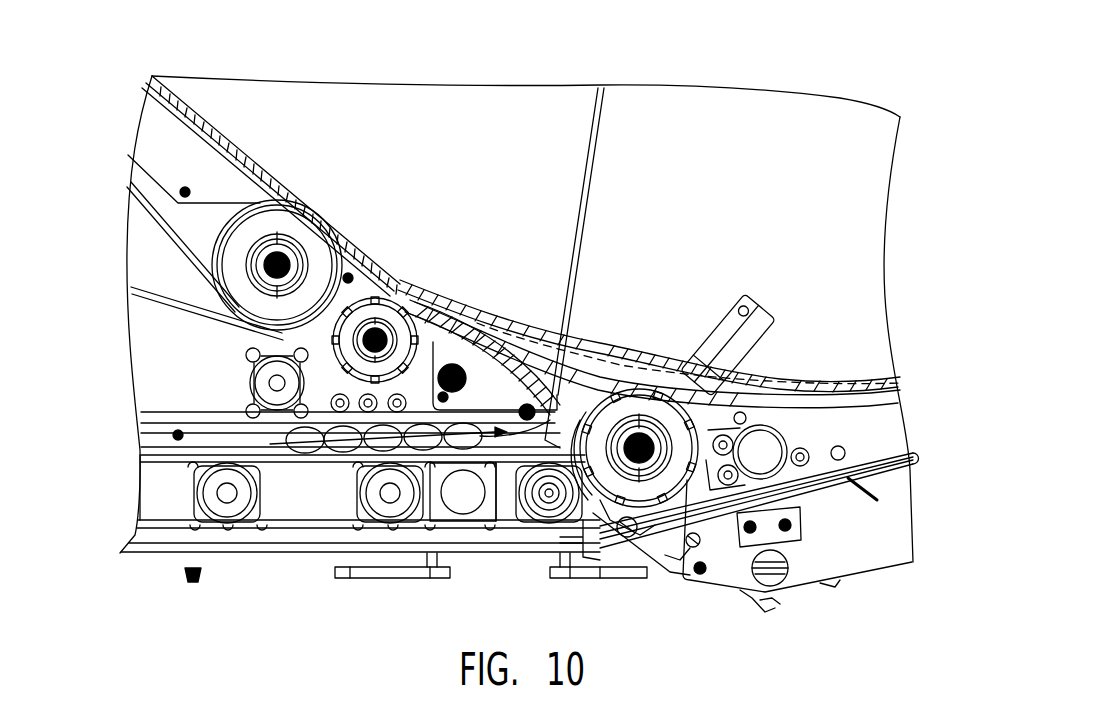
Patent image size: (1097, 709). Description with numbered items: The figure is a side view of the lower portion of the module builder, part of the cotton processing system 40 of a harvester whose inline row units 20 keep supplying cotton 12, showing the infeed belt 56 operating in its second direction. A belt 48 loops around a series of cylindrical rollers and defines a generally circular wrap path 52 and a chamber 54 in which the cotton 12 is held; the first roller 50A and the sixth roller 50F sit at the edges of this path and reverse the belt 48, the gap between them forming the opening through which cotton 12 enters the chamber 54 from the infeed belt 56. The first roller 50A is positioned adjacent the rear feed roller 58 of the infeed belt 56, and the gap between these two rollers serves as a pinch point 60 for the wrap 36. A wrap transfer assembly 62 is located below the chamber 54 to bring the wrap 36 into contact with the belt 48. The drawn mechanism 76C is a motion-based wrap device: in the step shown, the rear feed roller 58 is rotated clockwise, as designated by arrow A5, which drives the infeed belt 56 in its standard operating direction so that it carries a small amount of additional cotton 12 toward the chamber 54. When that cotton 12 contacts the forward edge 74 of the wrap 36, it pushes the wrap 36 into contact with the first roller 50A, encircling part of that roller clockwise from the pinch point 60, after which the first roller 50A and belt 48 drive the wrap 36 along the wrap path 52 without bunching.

The cotton 12 is at (478, 312).
The inline row units 20 is at (675, 48).
The wrap 36 is at (906, 466).
The cotton processing system 40 is at (728, 58).
The belt 48 is at (165, 88).
The first roller 50A is at (652, 388).
The sixth roller 50F is at (310, 238).
The wrap path 52 is at (254, 143).
The chamber 54 is at (492, 108).
The infeed belt 56 is at (303, 527).
The rear feed roller 58 is at (560, 507).
The pinch point 60 is at (596, 540).
The wrap transfer assembly 62 is at (862, 600).
The forward edge 74 is at (498, 453).
The wrap mechanism 76C is at (118, 472).
The arrow A5 is at (548, 490).